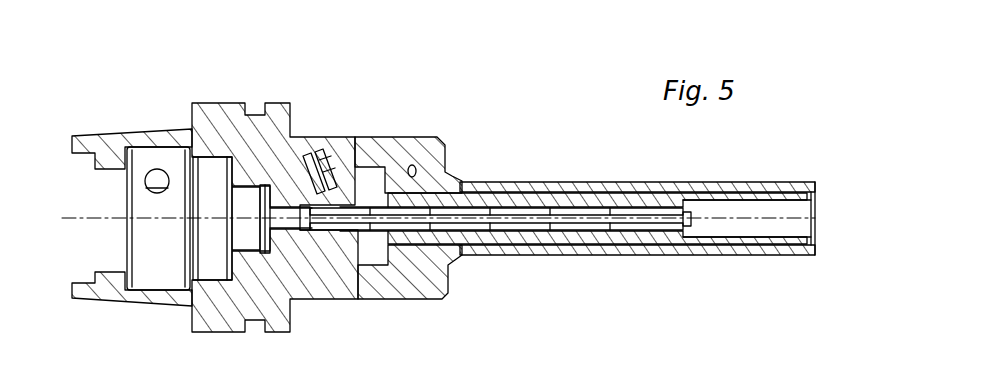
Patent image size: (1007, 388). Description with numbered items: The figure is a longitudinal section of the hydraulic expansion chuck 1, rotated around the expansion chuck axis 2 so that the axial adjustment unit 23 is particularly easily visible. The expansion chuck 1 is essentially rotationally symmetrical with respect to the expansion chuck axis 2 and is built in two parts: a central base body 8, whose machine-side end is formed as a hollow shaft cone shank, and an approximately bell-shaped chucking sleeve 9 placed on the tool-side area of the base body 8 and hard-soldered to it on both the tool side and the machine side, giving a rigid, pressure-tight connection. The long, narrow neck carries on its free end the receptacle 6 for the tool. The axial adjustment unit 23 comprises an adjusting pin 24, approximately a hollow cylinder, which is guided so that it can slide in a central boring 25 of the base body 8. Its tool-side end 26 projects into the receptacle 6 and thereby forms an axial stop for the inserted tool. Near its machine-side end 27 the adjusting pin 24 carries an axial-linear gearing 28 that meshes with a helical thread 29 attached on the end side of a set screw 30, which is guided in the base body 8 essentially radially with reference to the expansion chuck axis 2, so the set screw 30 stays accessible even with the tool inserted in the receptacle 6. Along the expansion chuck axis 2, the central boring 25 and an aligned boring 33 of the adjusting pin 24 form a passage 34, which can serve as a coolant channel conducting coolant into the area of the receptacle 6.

The expansion chuck 1 is at (537, 84).
The expansion chuck axis 2 is at (747, 215).
The receptacle 6 is at (797, 210).
The base body 8 is at (208, 103).
The chucking sleeve 9 is at (638, 255).
The axial adjustment unit 23 is at (357, 192).
The adjusting pin 24 is at (517, 230).
The central boring 25 is at (298, 228).
The tool-side end 26 is at (691, 223).
The machine-side end 27 is at (300, 237).
The axial-linear gearing 28 is at (352, 217).
The helical thread 29 is at (302, 207).
The set screw 30 is at (303, 207).
The boring 33 is at (582, 217).
The passage 34 is at (207, 213).